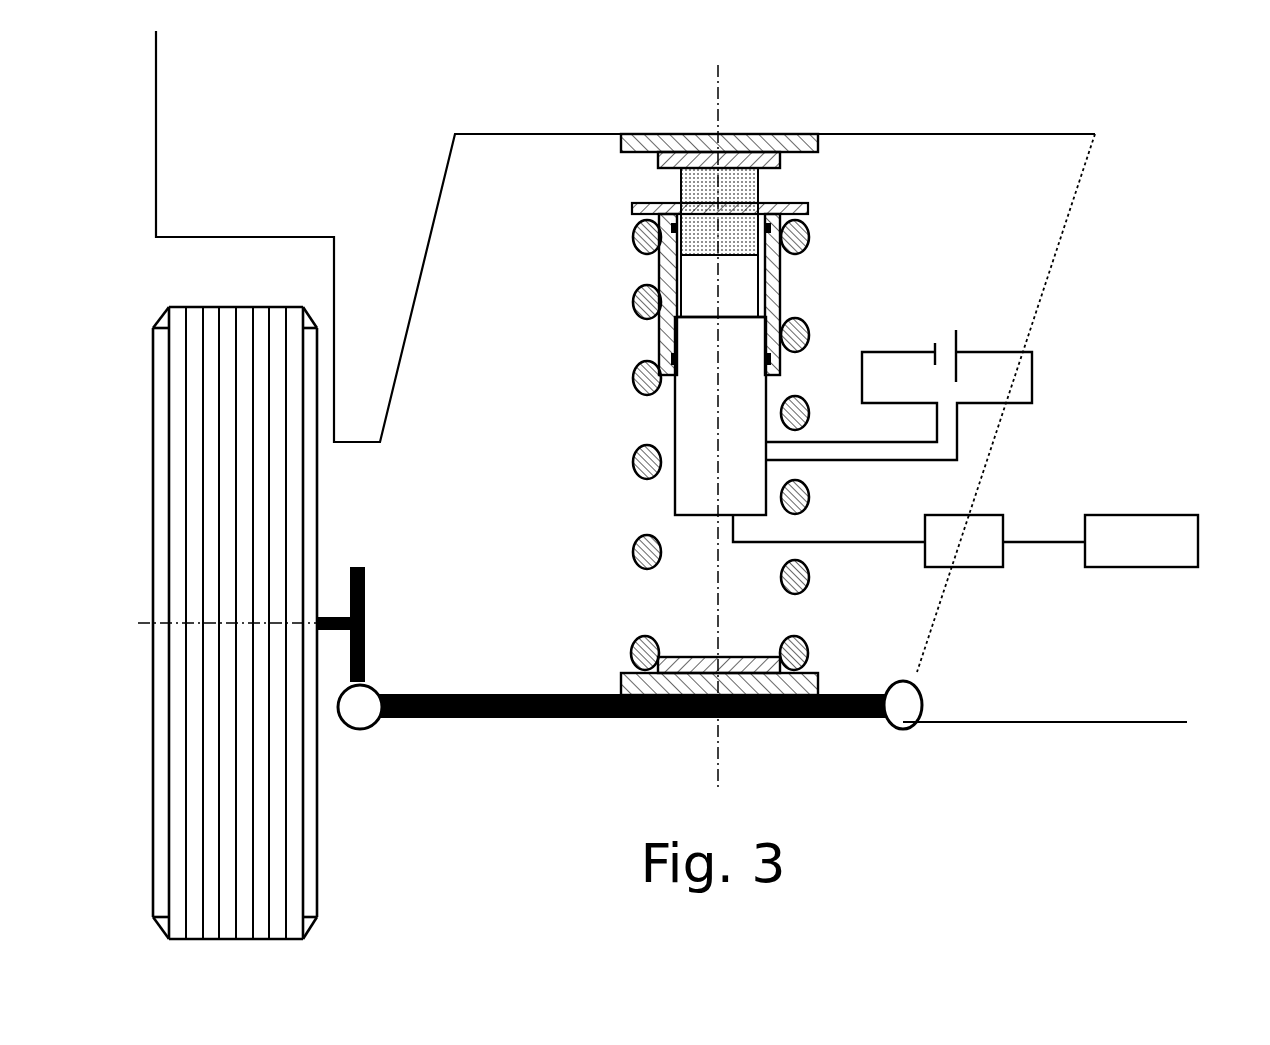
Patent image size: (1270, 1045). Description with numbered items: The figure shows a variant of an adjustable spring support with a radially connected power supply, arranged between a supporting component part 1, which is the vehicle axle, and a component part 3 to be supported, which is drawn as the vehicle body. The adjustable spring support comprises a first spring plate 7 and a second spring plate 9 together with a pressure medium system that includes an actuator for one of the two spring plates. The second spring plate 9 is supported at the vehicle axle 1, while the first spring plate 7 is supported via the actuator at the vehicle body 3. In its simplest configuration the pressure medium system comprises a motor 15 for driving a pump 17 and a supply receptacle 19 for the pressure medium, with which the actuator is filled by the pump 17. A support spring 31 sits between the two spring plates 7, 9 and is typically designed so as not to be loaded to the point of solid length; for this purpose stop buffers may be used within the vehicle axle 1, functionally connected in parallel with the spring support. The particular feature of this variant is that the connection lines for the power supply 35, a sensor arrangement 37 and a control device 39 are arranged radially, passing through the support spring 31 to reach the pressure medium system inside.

The supporting component part 1 is at (547, 731).
The component part to be supported 3 is at (993, 134).
The first spring plate 7 is at (632, 205).
The second spring plate 9 is at (805, 683).
The motor 15 is at (693, 421).
The pump 17 is at (742, 288).
The supply receptacle 19 is at (743, 193).
The support spring 31 is at (643, 552).
The power supply 35 is at (903, 460).
The sensor arrangement 37 is at (1165, 567).
The control device 39 is at (990, 567).